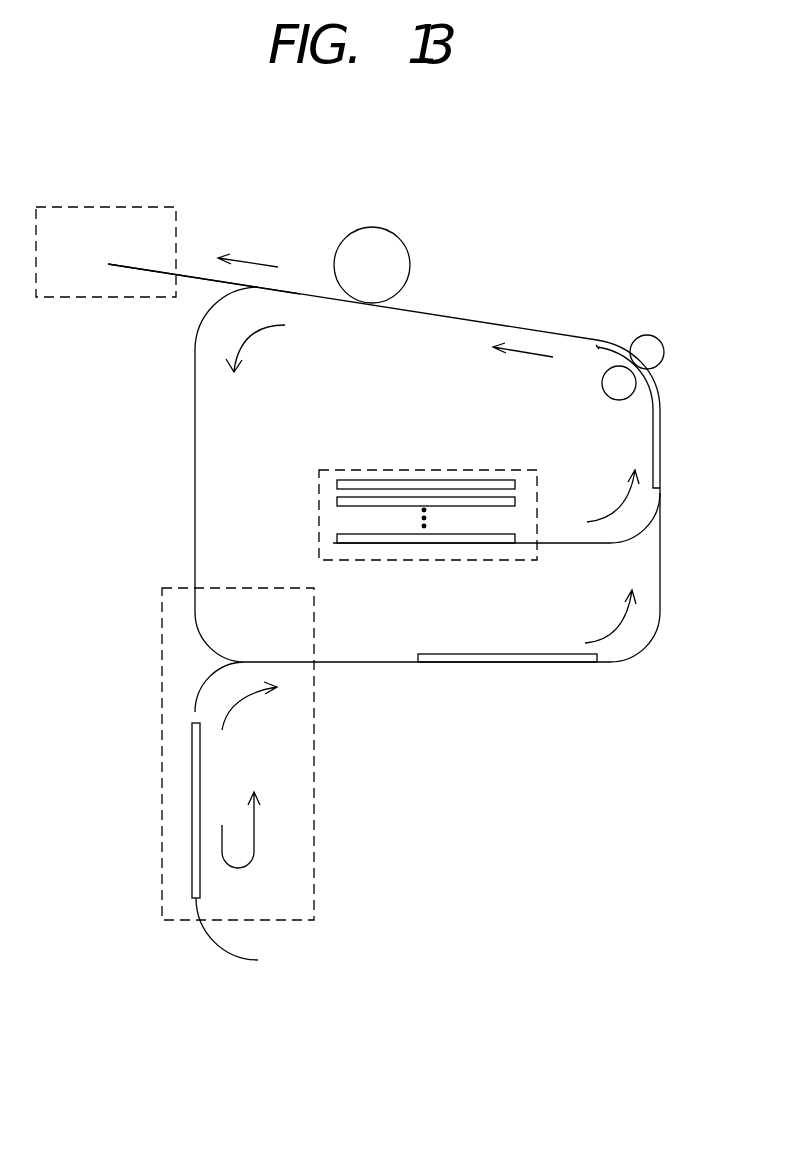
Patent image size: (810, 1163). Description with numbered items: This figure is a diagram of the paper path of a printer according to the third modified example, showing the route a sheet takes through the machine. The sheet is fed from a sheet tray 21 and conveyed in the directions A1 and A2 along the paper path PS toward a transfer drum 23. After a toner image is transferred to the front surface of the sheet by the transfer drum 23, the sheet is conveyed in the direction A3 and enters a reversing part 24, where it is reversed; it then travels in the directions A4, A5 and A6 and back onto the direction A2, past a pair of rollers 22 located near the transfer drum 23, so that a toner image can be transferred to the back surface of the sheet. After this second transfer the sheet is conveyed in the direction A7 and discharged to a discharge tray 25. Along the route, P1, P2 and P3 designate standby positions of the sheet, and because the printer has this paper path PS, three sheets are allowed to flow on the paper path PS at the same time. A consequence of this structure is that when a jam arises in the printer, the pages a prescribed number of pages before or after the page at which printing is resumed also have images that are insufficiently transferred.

The sheet tray 21 is at (355, 469).
The conveying roller pair 22 is at (653, 336).
The transfer drum 23 is at (381, 233).
The reversing part 24 is at (247, 588).
The discharge tray 25 is at (113, 207).
The standby position P1 is at (660, 437).
The standby position P2 is at (193, 825).
The standby position P3 is at (518, 663).
The paper path PS is at (526, 330).
The conveying direction A1 is at (623, 503).
The conveying direction A2 is at (523, 357).
The conveying direction A3 is at (246, 335).
The conveying direction A4 is at (251, 862).
The conveying direction A5 is at (245, 697).
The conveying direction A6 is at (616, 627).
The conveying direction A7 is at (249, 262).